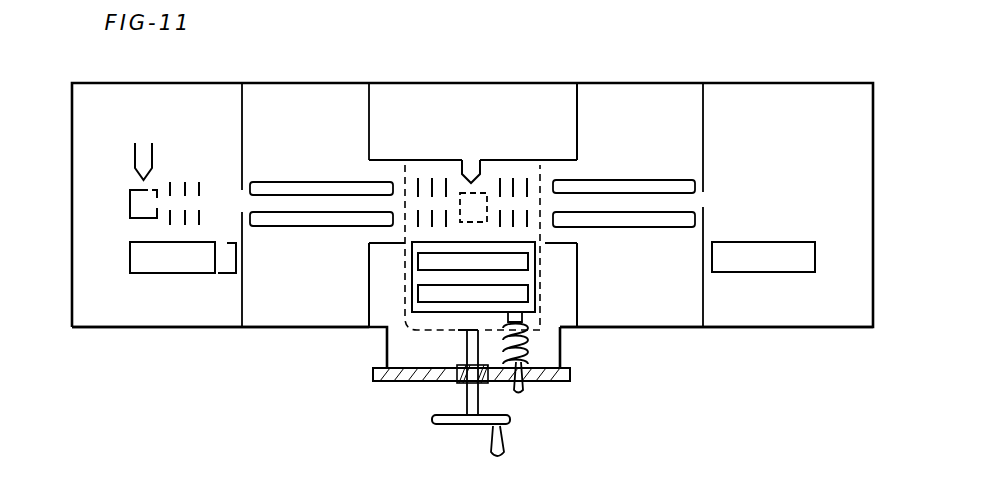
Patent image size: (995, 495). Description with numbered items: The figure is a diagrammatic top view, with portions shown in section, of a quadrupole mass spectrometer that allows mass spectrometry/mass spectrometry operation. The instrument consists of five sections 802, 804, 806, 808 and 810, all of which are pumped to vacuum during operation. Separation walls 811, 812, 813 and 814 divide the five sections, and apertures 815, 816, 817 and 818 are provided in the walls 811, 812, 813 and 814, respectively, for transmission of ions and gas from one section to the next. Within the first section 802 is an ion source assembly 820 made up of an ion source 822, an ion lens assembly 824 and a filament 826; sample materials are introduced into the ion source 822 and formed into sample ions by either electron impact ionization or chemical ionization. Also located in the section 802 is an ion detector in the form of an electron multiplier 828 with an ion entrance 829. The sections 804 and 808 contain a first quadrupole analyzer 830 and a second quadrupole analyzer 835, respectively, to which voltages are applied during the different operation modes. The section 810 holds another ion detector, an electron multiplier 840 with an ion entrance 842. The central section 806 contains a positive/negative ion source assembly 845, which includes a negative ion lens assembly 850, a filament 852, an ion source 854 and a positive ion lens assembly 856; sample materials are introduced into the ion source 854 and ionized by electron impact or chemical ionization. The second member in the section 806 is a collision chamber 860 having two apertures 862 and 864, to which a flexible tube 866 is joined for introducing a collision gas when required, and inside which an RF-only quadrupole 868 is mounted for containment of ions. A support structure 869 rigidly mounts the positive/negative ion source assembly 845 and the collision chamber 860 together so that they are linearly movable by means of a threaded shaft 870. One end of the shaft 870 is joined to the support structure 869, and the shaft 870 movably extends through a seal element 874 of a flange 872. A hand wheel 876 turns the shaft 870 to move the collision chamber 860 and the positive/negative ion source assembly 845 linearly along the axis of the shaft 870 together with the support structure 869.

The first section 802 is at (128, 92).
The second section 804 is at (304, 93).
The third section 806 is at (414, 98).
The fourth section 808 is at (619, 92).
The fifth section 810 is at (757, 94).
The separation wall 811 is at (233, 87).
The separation wall 812 is at (359, 87).
The separation wall 813 is at (567, 87).
The separation wall 814 is at (697, 87).
The aperture 815 is at (239, 205).
The aperture 816 is at (403, 197).
The aperture 817 is at (544, 197).
The aperture 818 is at (706, 204).
The ion source assembly 820 is at (176, 168).
The ion source 822 is at (130, 209).
The ion lens assembly 824 is at (192, 183).
The filament 826 is at (135, 150).
The electron multiplier 828 is at (130, 260).
The ion entrance 829 is at (222, 252).
The first quadrupole analyzer 830 is at (322, 218).
The second quadrupole analyzer 835 is at (638, 192).
The electron multiplier 840 is at (755, 273).
The ion entrance 842 is at (722, 242).
The positive/negative ion source assembly 845 is at (446, 165).
The negative ion lens assembly 850 is at (427, 178).
The filament 852 is at (481, 176).
The ion source 854 is at (488, 193).
The positive ion lens assembly 856 is at (524, 177).
The collision chamber 860 is at (397, 328).
The aperture 862 is at (405, 283).
The aperture 864 is at (535, 275).
The flexible tube 866 is at (528, 348).
The RF-only quadrupole 868 is at (447, 292).
The support structure 869 is at (548, 266).
The threaded shaft 870 is at (480, 394).
The flange 872 is at (566, 382).
The seal element 874 is at (460, 383).
The hand wheel 876 is at (458, 424).